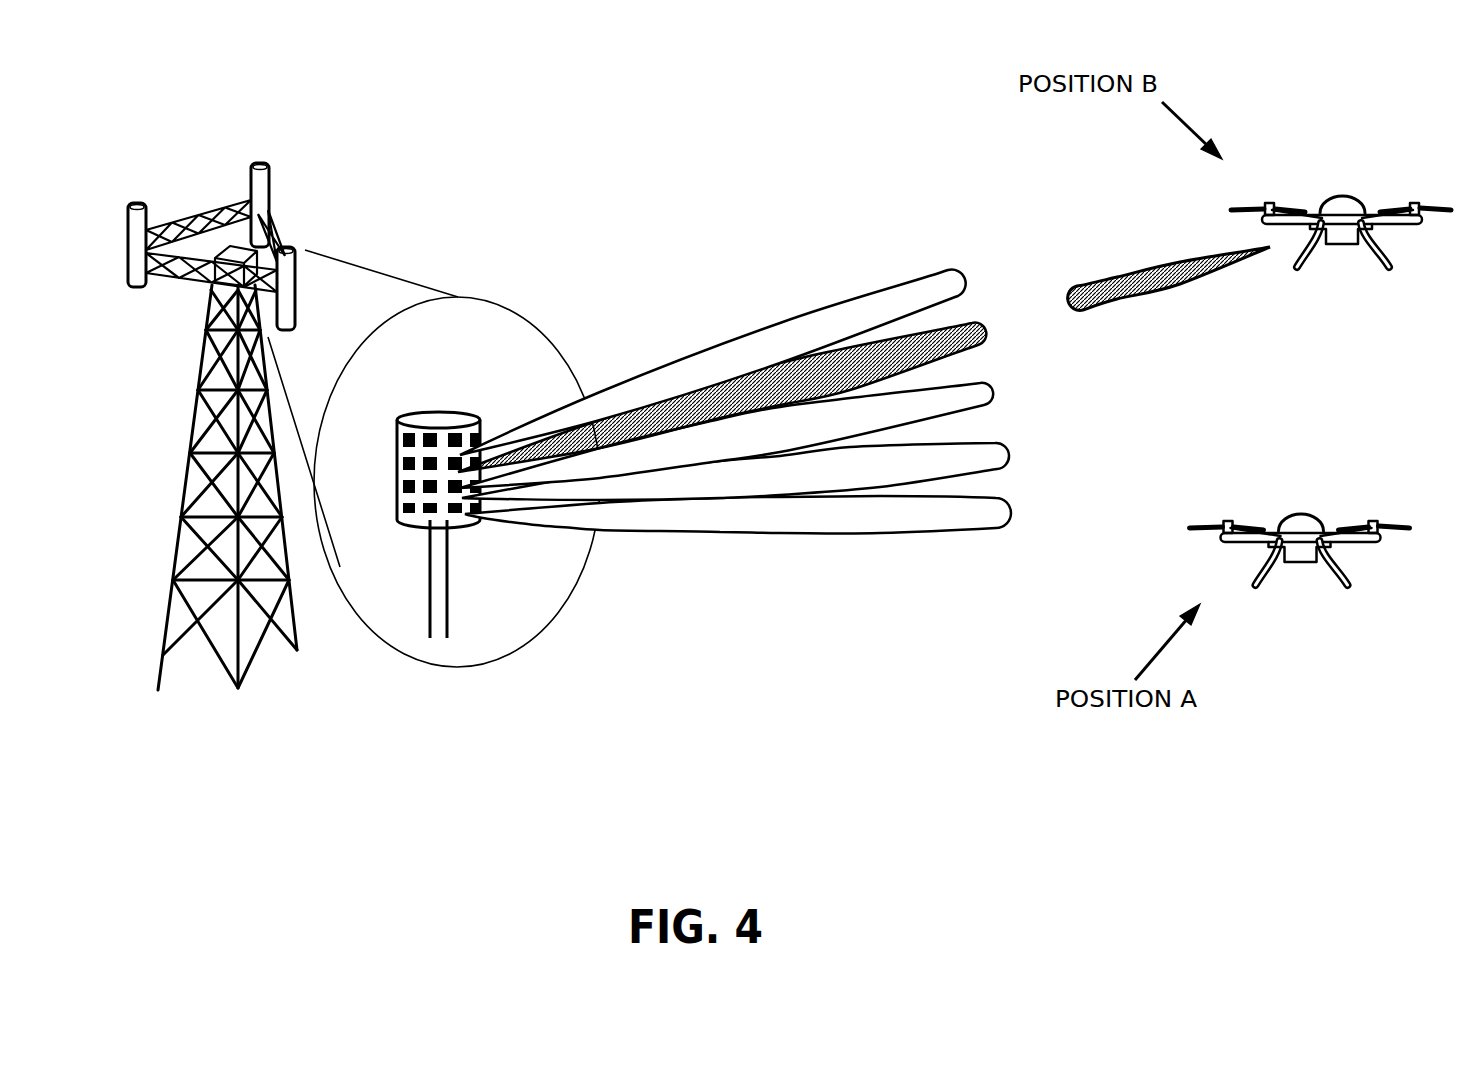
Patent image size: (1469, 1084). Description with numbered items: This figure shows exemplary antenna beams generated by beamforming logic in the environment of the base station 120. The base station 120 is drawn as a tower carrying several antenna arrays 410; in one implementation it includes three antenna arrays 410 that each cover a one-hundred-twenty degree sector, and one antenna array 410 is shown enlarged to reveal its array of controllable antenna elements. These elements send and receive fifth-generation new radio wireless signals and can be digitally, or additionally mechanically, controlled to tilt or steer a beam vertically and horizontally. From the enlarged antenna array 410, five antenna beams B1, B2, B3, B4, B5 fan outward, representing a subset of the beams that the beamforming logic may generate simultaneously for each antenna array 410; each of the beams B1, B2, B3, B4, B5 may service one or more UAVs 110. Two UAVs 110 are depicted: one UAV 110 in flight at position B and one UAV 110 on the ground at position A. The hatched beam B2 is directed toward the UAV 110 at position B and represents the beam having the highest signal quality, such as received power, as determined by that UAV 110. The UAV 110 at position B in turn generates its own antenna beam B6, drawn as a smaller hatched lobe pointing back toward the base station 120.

The base station 120 is at (241, 112).
The antenna array 410 is at (142, 203).
The UAV 110 is at (1339, 178).
The antenna beam B1 is at (936, 268).
The antenna beam B2 is at (958, 342).
The antenna beam B3 is at (975, 402).
The antenna beam B4 is at (995, 456).
The antenna beam B5 is at (908, 536).
The antenna beam B6 is at (1127, 304).